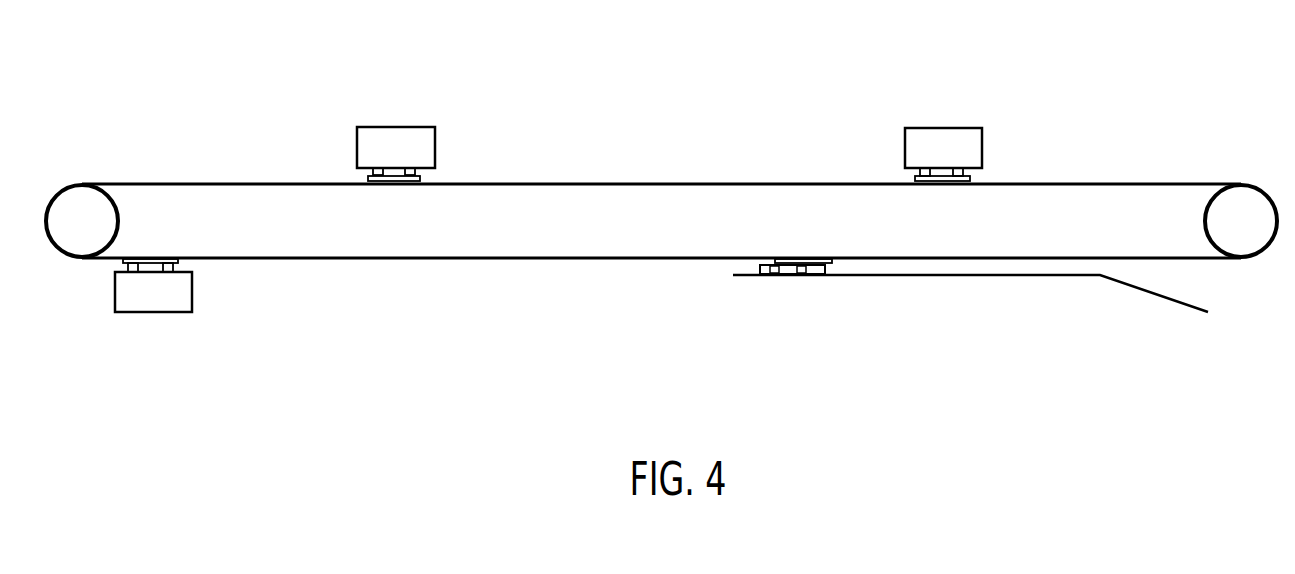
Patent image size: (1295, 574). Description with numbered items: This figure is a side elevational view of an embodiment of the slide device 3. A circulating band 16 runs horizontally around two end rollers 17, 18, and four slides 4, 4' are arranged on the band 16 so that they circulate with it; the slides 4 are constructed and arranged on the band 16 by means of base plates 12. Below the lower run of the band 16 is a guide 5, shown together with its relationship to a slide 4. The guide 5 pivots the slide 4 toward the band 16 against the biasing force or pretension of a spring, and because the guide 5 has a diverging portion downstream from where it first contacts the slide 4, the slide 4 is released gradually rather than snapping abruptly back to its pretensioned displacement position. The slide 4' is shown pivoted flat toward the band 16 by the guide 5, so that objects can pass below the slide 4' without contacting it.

The slide device 3 is at (78, 77).
The slide 4 is at (548, 222).
The slide 4' is at (792, 308).
The guide 5 is at (1003, 277).
The base plate 12 is at (430, 178).
The band 16 is at (538, 259).
The left deflection roller 17 is at (75, 193).
The right deflection roller 18 is at (1238, 195).